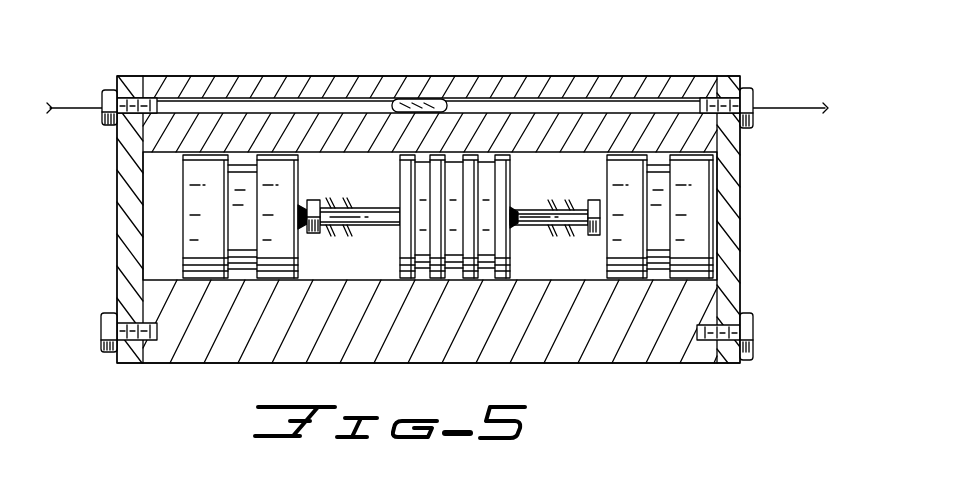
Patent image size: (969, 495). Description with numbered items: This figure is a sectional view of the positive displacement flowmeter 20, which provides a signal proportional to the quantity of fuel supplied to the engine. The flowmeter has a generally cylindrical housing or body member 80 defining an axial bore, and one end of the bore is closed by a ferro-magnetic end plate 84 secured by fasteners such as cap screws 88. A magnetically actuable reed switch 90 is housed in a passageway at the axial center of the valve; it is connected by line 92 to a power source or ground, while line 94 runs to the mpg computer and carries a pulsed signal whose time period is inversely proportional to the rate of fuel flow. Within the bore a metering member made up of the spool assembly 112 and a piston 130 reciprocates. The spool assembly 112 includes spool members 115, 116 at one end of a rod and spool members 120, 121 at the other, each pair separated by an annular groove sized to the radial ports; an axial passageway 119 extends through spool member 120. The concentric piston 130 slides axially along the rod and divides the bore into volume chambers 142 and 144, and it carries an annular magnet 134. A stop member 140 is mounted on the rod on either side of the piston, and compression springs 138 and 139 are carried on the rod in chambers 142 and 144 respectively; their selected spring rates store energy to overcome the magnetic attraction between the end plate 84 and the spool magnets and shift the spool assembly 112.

The positive displacement flowmeter 20 is at (675, 62).
The housing or body member 80 is at (700, 77).
The end plate 84 is at (117, 270).
The cap screws 88 is at (746, 348).
The magnetically actuable switch 90 is at (431, 98).
The line 92 is at (85, 104).
The line 94 is at (777, 109).
The spool assembly 112 is at (179, 180).
The spool member 115 is at (212, 208).
The spool member 116 is at (289, 208).
The axial passageway 119 is at (393, 225).
The spool member 120 is at (639, 213).
The spool member 121 is at (704, 213).
The piston 130 is at (504, 194).
The annular magnet 134 is at (452, 160).
The compression spring 138 is at (343, 201).
The compression spring 139 is at (549, 205).
The stop member 140 is at (308, 200).
The volume chamber 142 is at (355, 273).
The volume chamber 144 is at (570, 273).